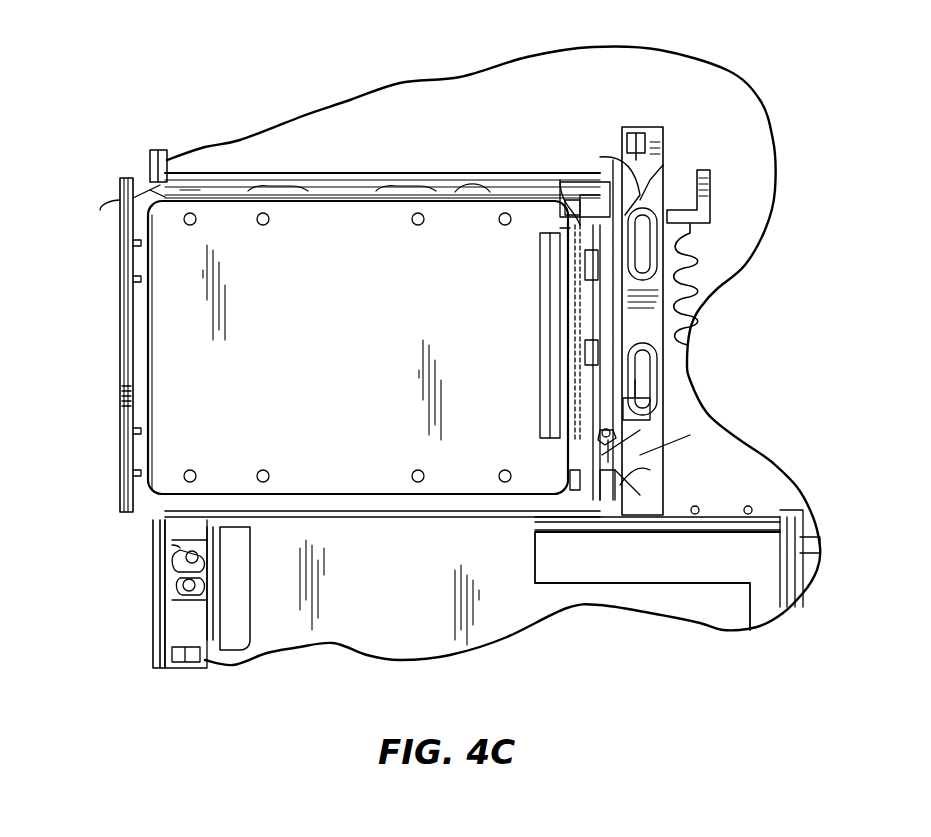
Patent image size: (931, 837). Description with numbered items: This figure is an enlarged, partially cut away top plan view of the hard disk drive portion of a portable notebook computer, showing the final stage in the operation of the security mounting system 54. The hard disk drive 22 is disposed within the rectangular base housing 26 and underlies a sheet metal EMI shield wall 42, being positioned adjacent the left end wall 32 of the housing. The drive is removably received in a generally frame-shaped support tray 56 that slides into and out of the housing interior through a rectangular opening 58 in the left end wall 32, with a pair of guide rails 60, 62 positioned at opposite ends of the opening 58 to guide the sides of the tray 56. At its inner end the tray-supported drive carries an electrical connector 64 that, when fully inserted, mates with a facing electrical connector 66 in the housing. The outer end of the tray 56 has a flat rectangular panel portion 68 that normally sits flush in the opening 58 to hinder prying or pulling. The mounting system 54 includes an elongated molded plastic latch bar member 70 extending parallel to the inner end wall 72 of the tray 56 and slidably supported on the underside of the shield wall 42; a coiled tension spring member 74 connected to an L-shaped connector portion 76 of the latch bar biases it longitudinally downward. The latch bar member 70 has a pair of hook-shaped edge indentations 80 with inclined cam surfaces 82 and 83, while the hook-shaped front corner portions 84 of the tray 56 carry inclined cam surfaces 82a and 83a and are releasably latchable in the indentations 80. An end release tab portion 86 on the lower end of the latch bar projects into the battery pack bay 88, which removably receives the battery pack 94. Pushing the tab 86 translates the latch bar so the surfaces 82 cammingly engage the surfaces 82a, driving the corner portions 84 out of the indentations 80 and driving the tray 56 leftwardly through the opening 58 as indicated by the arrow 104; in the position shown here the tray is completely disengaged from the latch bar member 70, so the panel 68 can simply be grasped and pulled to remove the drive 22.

The hard disk drive 22 is at (358, 347).
The base housing 26 is at (541, 44).
The left end wall 32 is at (152, 622).
The EMI shield wall 42 is at (533, 365).
The security mounting system 54 is at (750, 201).
The support tray 56 is at (478, 212).
The rectangular opening 58 is at (124, 207).
The guide rail 60 is at (425, 172).
The guide rail 62 is at (445, 520).
The electrical connector 64 is at (558, 361).
The electrical connector 66 is at (598, 316).
The panel portion 68 is at (123, 345).
The latch bar member 70 is at (665, 329).
The inner end wall 72 is at (580, 403).
The coiled tension spring member 74 is at (700, 286).
The L-shaped connector portion 76 is at (715, 182).
The hook-shaped edge indentation 80 is at (642, 130).
The inclined cam surface 82 is at (615, 160).
The inclined cam surface 82a is at (640, 198).
The inclined cam surface 83 is at (603, 145).
The inclined cam surface 83a is at (590, 192).
The front corner portion 84 is at (565, 220).
The end release tab portion 86 is at (680, 508).
The battery pack bay 88 is at (352, 606).
The battery pack 94 is at (608, 577).
The arrow 104 is at (93, 385).